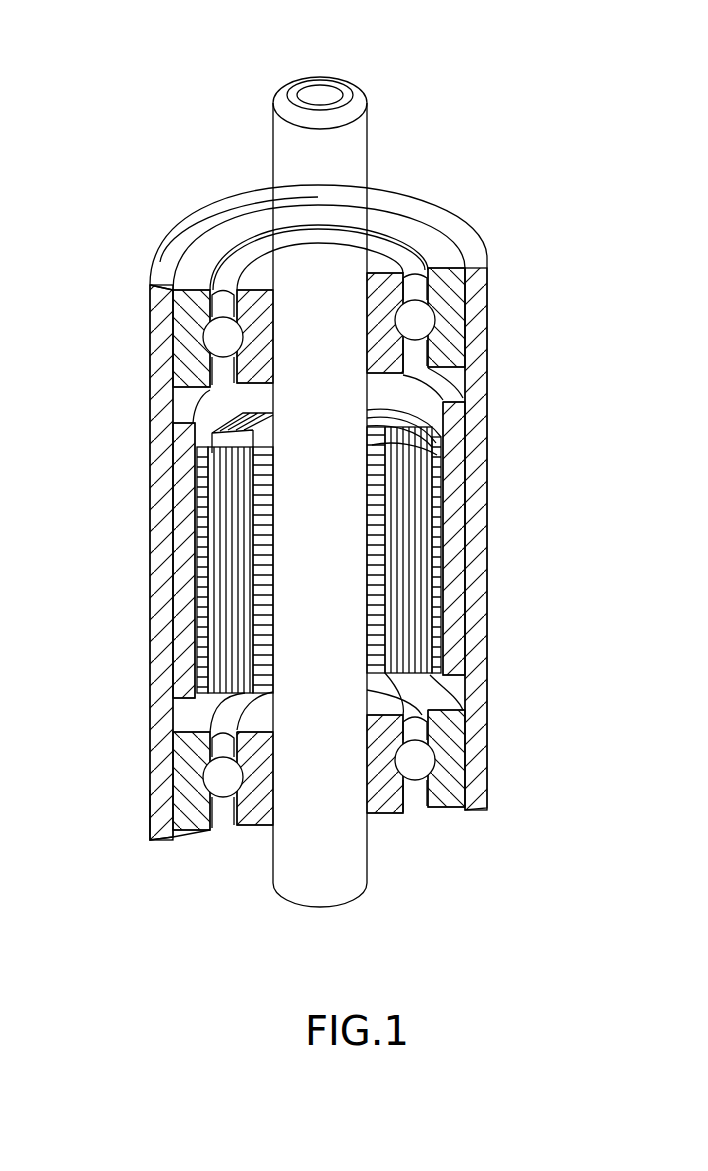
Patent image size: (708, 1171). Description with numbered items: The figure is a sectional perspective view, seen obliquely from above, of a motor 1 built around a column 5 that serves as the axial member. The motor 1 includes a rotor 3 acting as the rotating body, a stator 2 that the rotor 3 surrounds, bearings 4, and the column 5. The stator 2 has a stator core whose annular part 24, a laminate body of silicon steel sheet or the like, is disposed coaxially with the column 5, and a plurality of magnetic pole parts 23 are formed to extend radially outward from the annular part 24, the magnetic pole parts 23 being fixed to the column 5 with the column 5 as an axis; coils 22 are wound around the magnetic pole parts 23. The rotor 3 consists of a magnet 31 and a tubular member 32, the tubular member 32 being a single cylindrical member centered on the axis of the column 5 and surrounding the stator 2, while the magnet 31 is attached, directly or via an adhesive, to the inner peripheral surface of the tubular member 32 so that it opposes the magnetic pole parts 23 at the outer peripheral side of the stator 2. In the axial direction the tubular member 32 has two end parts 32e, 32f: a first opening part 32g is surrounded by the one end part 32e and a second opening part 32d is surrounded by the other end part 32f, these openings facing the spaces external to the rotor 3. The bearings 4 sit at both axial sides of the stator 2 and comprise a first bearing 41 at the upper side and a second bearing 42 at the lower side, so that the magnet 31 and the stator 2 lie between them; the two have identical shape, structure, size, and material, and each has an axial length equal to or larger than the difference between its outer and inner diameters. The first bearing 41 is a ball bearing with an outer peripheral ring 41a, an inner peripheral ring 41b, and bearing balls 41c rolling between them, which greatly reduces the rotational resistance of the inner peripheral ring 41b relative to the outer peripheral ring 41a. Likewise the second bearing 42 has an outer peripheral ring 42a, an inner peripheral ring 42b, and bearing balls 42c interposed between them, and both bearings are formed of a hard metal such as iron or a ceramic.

The motor 1 is at (106, 101).
The stator 2 is at (45, 532).
The rotor 3 is at (608, 473).
The bearings 4 is at (375, 933).
The column 5 is at (293, 160).
The coils 22 is at (220, 560).
The magnetic pole parts 23 is at (203, 582).
The annular part 24 is at (263, 580).
The magnet 31 is at (455, 507).
The tubular member 32 is at (477, 595).
The second opening part 32d is at (221, 836).
The end part 32e is at (158, 312).
The end part 32f is at (160, 802).
The first opening part 32g is at (197, 248).
The first bearing 41 is at (379, 230).
The outer peripheral ring 41a is at (437, 290).
The inner peripheral ring 41b is at (383, 290).
The bearing balls 41c is at (412, 323).
The second bearing 42 is at (371, 845).
The outer peripheral ring 42a is at (457, 797).
The inner peripheral ring 42b is at (392, 812).
The bearing balls 42c is at (415, 760).